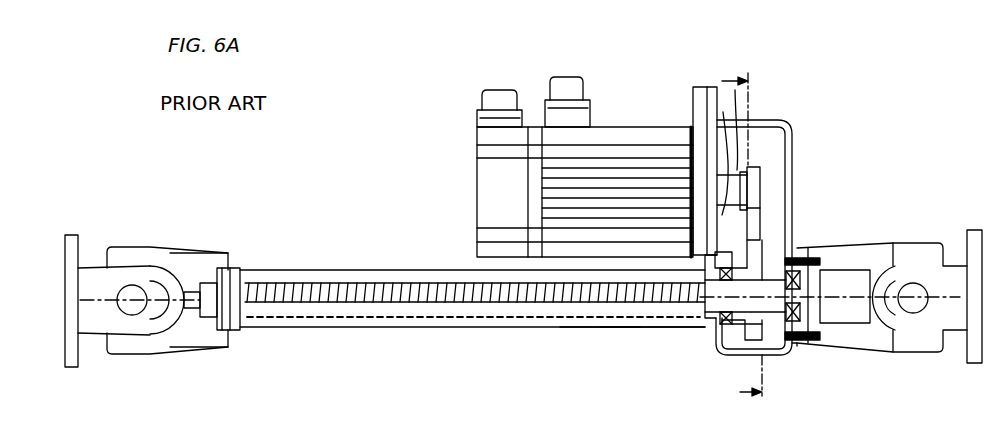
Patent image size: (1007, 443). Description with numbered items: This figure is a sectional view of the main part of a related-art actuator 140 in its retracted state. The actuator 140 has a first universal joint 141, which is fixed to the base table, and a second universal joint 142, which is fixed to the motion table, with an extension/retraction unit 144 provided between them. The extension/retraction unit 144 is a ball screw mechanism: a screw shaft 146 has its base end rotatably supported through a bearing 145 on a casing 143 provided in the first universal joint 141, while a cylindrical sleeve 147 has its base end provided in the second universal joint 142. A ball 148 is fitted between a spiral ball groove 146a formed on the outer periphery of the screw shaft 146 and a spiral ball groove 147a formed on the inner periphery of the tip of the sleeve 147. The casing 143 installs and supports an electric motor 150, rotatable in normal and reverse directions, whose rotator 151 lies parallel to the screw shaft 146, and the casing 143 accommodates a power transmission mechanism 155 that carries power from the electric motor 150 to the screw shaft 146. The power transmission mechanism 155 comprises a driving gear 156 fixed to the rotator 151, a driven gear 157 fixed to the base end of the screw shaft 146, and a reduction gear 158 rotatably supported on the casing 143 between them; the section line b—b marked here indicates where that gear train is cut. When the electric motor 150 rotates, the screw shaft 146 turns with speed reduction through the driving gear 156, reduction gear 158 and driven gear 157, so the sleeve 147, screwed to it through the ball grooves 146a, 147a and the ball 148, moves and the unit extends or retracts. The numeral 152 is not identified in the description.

The actuator 140 is at (443, 116).
The first universal joint 141 is at (950, 262).
The second universal joint 142 is at (92, 265).
The casing 143 is at (768, 119).
The extension/retraction unit 144 is at (601, 330).
The bearing 145 is at (712, 320).
The screw shaft 146 is at (402, 320).
The spiral ball groove 146a is at (480, 320).
The cylindrical sleeve 147 is at (330, 270).
The spiral ball groove 147a is at (623, 320).
The ball 148 is at (653, 320).
The electric motor 150 is at (638, 124).
The rotator 151 is at (748, 172).
The gear housing 152 is at (669, 349).
The power transmission mechanism 155 is at (765, 159).
The driving gear 156 is at (757, 187).
The driven gear 157 is at (773, 357).
The reduction gear 158 is at (762, 228).